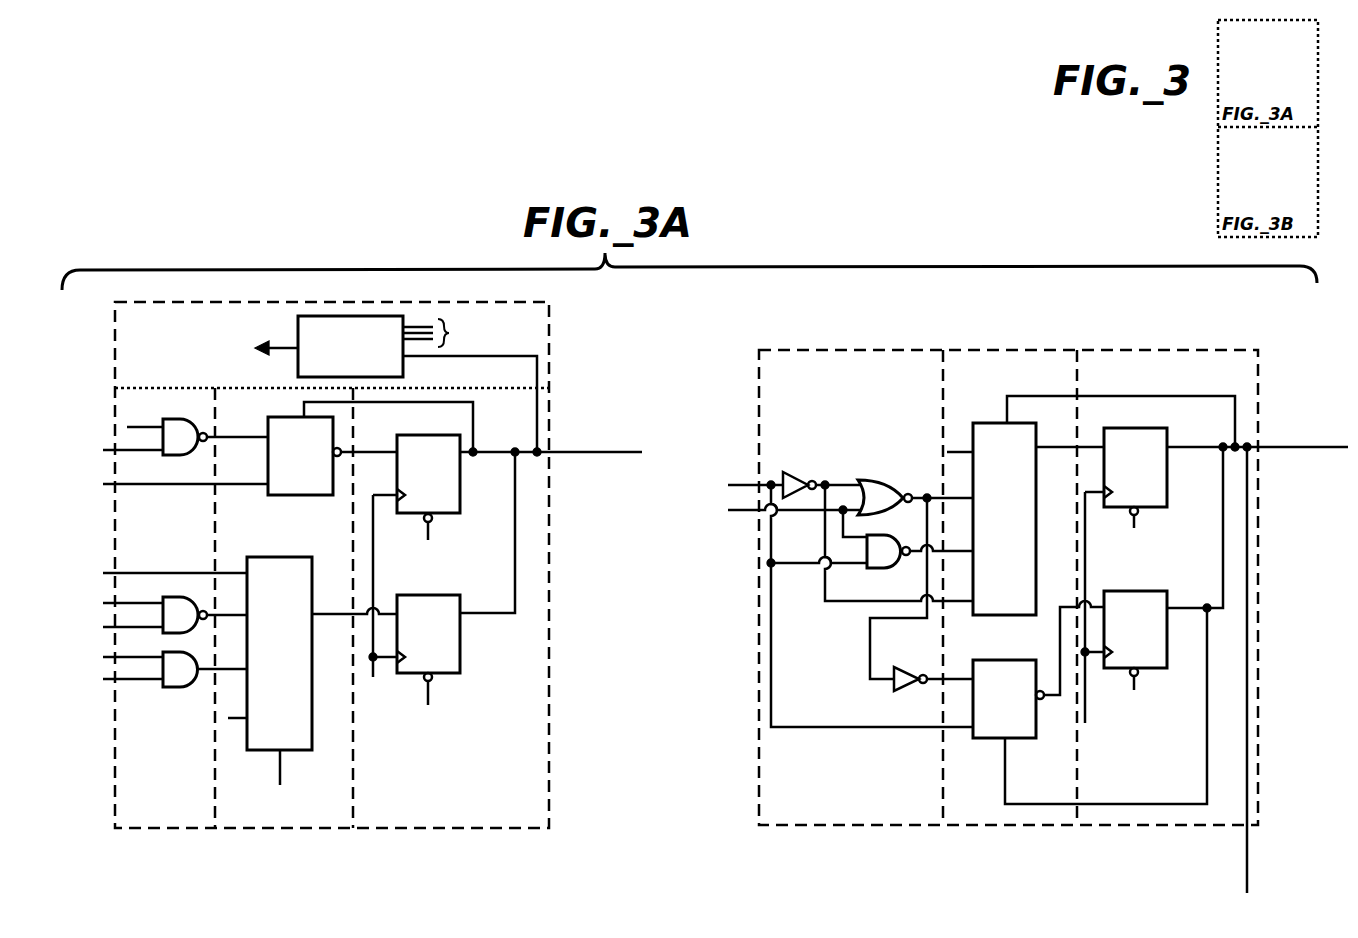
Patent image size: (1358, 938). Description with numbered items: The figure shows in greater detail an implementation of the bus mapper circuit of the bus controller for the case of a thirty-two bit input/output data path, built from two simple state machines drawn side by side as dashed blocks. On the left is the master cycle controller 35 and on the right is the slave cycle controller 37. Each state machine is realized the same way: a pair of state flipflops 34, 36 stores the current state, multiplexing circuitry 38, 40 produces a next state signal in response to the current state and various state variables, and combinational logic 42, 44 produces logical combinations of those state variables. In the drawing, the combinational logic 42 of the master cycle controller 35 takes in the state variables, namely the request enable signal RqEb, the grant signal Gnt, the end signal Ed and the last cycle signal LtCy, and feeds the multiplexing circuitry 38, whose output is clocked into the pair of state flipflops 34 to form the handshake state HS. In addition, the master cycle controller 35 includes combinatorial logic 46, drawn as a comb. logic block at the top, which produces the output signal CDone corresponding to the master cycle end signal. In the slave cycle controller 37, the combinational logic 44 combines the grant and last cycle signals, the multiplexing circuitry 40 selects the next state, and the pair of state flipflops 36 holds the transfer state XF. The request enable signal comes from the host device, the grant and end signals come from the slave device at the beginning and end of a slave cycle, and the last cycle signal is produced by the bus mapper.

The pair of state flipflops 34 is at (553, 688).
The master cycle controller 35 is at (563, 322).
The pair of state flipflops 36 is at (1260, 688).
The slave cycle controller 37 is at (1267, 347).
The multiplexing circuitry 38 is at (355, 812).
The multiplexing circuitry 40 is at (1008, 350).
The combinational logic 42 is at (112, 750).
The combinational logic 44 is at (758, 780).
The combinatorial logic 46 is at (112, 357).